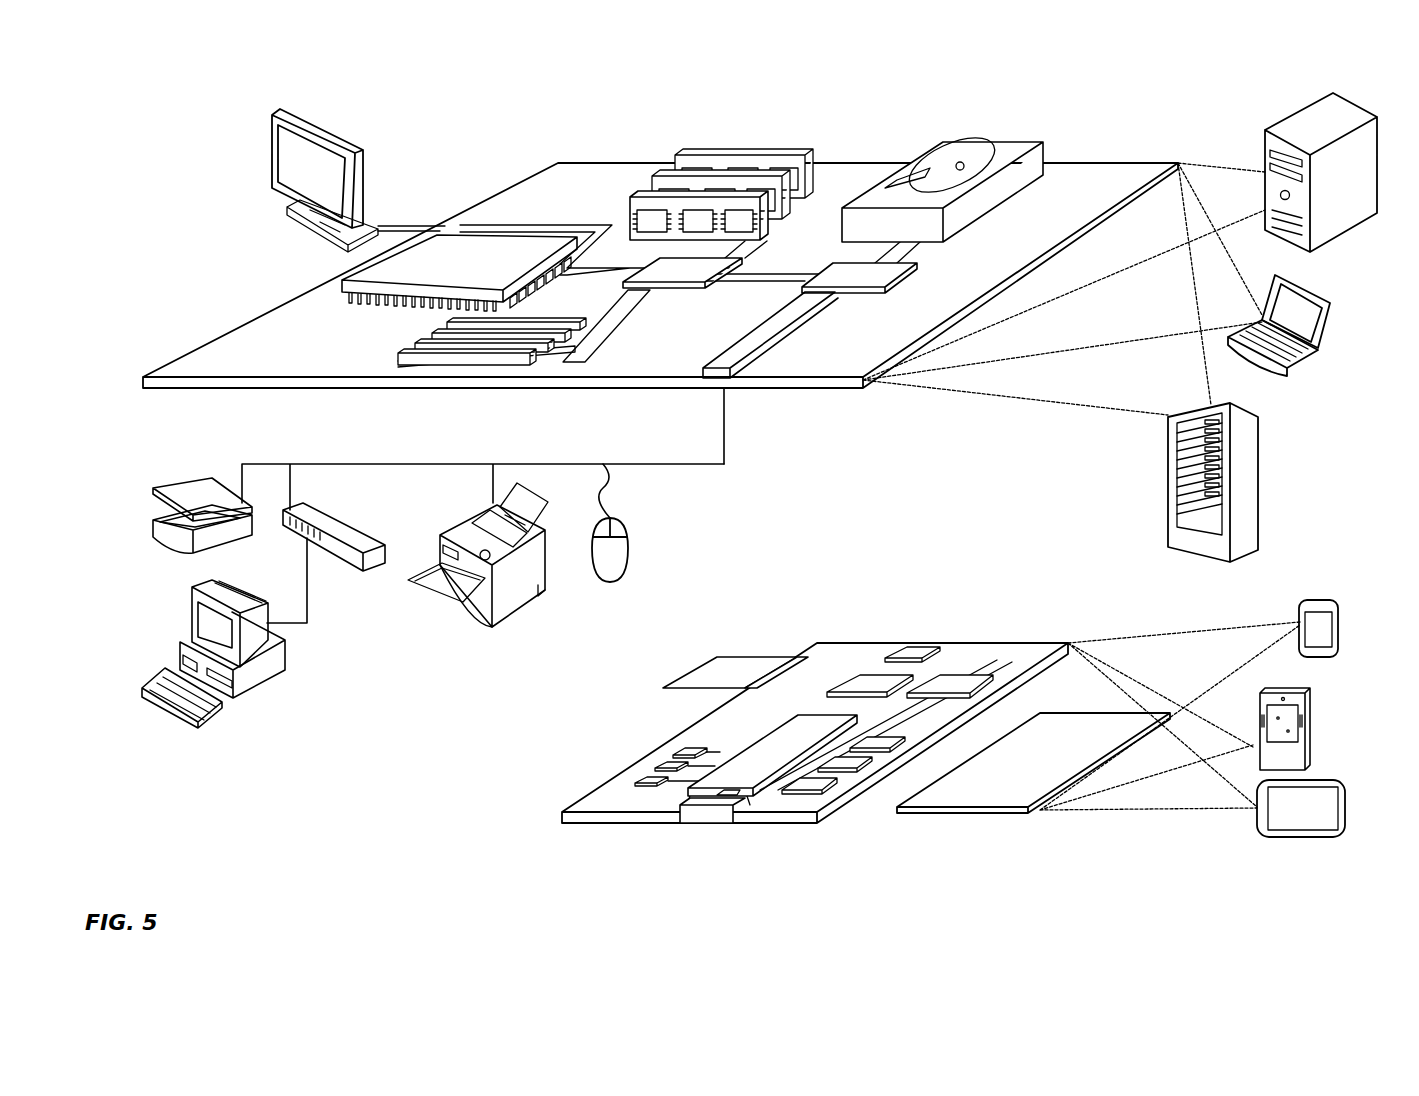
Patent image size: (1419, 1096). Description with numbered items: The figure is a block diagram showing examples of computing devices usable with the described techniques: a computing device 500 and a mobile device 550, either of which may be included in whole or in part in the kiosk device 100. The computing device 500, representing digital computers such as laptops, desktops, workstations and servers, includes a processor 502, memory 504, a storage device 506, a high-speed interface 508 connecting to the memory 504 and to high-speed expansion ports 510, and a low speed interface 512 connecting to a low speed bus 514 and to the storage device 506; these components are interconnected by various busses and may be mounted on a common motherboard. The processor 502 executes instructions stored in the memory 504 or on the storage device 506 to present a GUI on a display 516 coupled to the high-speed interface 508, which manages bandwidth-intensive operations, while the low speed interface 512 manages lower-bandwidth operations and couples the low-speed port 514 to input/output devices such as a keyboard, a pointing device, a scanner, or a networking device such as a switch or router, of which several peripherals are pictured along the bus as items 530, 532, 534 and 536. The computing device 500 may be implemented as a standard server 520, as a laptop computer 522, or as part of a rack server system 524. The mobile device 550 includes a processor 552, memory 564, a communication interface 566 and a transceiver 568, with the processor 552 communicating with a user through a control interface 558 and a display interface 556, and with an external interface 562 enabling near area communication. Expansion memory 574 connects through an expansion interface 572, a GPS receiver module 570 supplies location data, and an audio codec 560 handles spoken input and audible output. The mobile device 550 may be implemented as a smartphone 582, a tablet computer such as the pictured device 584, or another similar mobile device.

The computing device 500 is at (235, 45).
The processor 502 is at (345, 283).
The memory 504 is at (703, 155).
The storage device 506 is at (993, 140).
The high-speed interface 508 is at (668, 272).
The high-speed expansion ports 510 is at (420, 353).
The low speed interface 512 is at (847, 270).
The low speed bus 514 is at (735, 382).
The display 516 is at (276, 110).
The standard server 520 is at (1265, 148).
The laptop computer 522 is at (1290, 268).
The rack server system 524 is at (1167, 483).
The scanner 530 is at (193, 483).
The network hub 532 is at (352, 573).
The printer 534 is at (530, 607).
The mouse 536 is at (628, 562).
The mobile device 550 is at (532, 860).
The processor 552 is at (770, 757).
The display interface 556 is at (812, 790).
The control interface 558 is at (853, 768).
The audio codec 560 is at (876, 740).
The external interface 562 is at (703, 815).
The memory 564 is at (1090, 735).
The communication interface 566 is at (880, 680).
The transceiver 568 is at (960, 683).
The GPS receiver module 570 is at (915, 647).
The expansion interface 572 is at (797, 657).
The expansion memory 574 is at (717, 657).
The smartphone 582 is at (1325, 600).
The tablet computer 584 is at (1345, 808).
The kiosk device 100 is at (1310, 702).